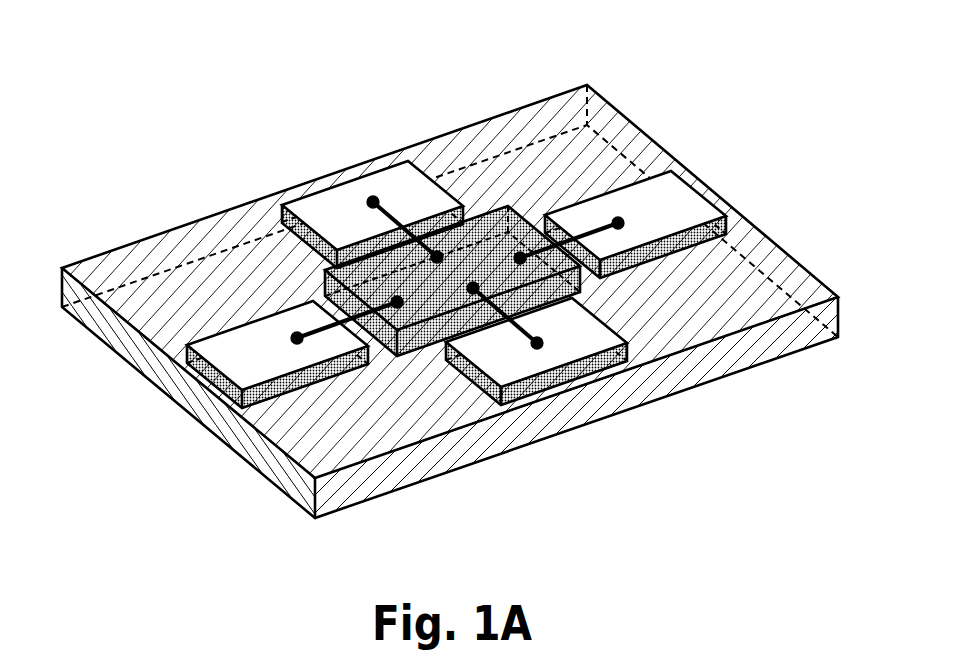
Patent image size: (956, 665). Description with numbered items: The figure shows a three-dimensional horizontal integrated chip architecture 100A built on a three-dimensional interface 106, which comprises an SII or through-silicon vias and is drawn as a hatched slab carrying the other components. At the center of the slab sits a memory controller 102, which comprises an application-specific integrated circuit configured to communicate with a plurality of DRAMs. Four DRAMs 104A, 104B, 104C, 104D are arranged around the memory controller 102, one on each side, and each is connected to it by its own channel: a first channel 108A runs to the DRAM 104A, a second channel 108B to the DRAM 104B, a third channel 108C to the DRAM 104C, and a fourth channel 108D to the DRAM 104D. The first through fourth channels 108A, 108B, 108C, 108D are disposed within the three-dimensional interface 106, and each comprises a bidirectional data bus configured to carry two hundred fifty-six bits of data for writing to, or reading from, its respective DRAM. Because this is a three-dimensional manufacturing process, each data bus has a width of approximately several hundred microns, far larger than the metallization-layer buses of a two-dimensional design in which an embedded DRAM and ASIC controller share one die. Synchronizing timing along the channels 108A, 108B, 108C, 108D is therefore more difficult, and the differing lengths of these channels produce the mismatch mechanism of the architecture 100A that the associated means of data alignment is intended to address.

The 3D horizontal integrated chip architecture 100A is at (114, 33).
The memory controller 102 is at (459, 259).
The DRAM 104A is at (268, 340).
The DRAM 104B is at (343, 207).
The DRAM 104C is at (677, 204).
The DRAM 104D is at (576, 326).
The 3D interface 106 is at (748, 285).
The first channel 108A is at (367, 330).
The second channel 108B is at (394, 196).
The third channel 108C is at (601, 207).
The fourth channel 108D is at (502, 335).